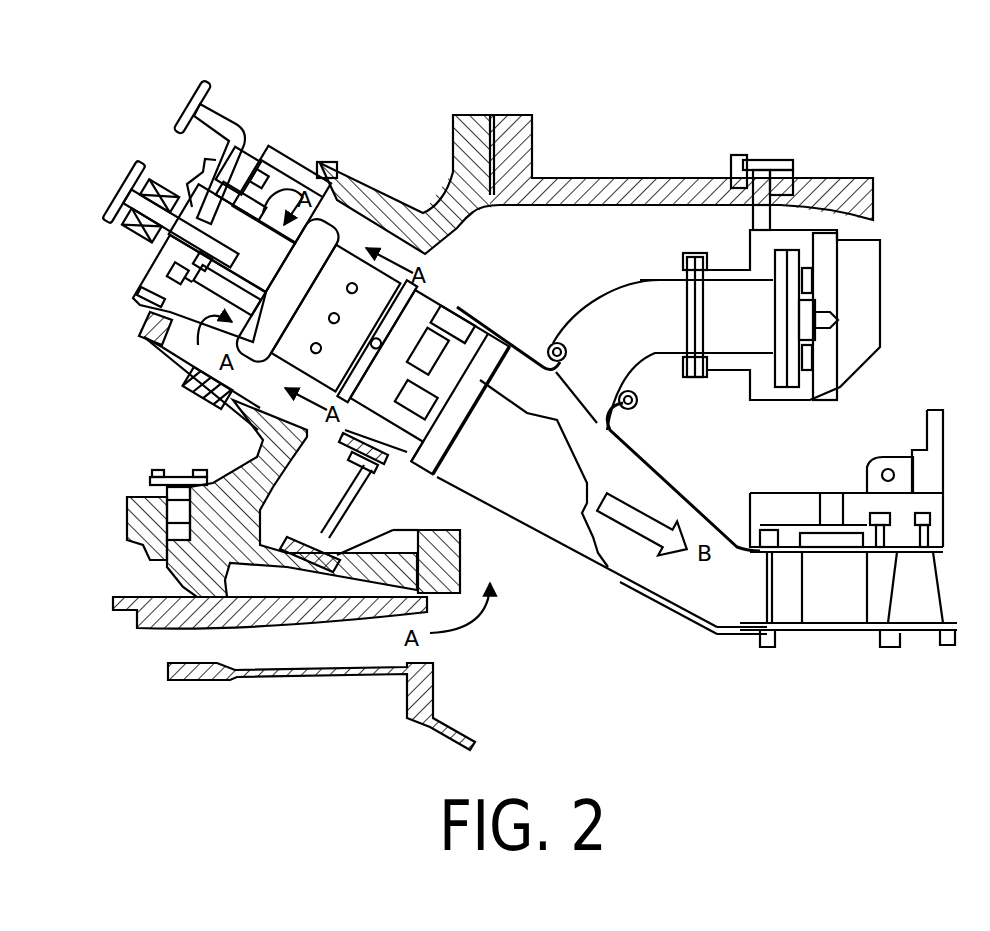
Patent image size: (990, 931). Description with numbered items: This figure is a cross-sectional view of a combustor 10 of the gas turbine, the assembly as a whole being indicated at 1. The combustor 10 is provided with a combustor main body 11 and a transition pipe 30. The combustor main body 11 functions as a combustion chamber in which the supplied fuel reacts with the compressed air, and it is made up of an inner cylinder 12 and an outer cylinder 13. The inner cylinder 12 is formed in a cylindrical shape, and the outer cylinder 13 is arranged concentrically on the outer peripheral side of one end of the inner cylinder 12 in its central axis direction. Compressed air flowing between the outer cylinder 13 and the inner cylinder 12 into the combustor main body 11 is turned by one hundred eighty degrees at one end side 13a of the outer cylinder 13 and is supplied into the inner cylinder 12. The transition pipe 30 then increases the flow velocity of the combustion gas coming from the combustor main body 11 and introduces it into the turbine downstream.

The gas turbine combustor 1 is at (130, 103).
The combustor 10 is at (118, 187).
The combustor main body 11 is at (436, 298).
The inner cylinder 12 is at (348, 250).
The outer cylinder 13 is at (286, 158).
The one end side of the outer cylinder 13a is at (245, 165).
The transition pipe 30 is at (528, 343).